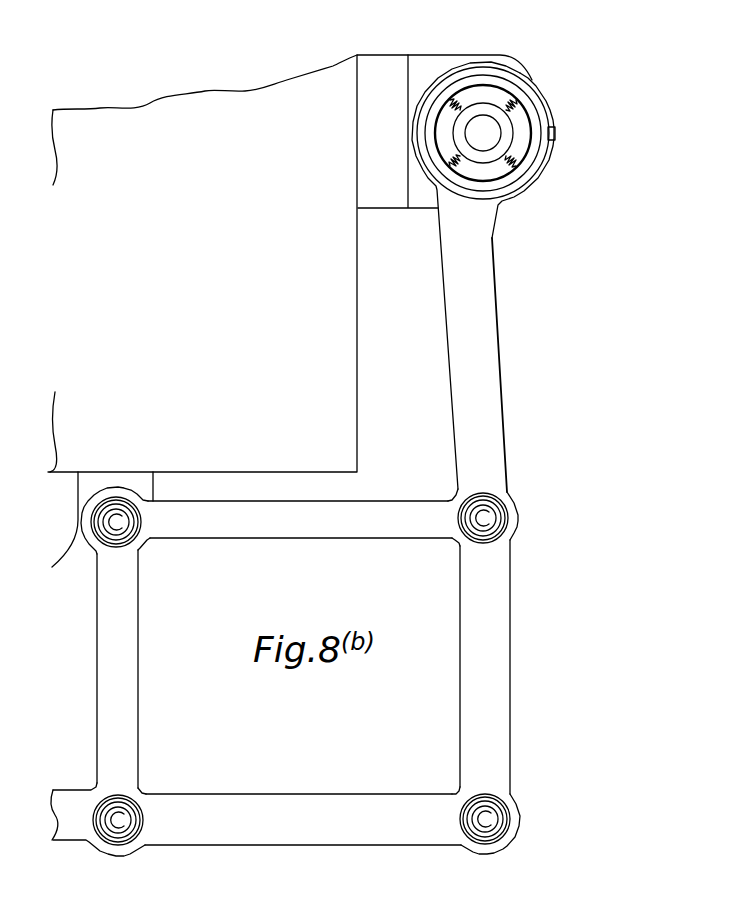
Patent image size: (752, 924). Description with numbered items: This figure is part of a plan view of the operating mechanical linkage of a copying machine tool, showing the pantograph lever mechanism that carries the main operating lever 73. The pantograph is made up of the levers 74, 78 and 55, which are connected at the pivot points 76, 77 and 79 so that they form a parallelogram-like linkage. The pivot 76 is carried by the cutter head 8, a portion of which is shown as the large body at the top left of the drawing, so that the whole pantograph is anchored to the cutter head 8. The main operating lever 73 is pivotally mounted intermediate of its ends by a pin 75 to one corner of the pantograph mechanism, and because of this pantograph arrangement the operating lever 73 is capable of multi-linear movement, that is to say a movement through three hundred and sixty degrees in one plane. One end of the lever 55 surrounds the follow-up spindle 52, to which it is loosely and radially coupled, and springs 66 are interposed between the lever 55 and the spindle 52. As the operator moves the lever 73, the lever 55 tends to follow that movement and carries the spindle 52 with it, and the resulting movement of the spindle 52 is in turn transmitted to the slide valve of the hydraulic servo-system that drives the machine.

The cutter head 8 is at (362, 343).
The follow-up spindle 52 is at (487, 131).
The lever 55 is at (523, 90).
The springs 66 is at (513, 162).
The main operating lever 73 is at (290, 845).
The lever 74 is at (145, 487).
The pin 75 is at (134, 805).
The pivot 76 is at (117, 522).
The pivot 77 is at (490, 815).
The lever 78 is at (380, 525).
The pivot 79 is at (485, 515).